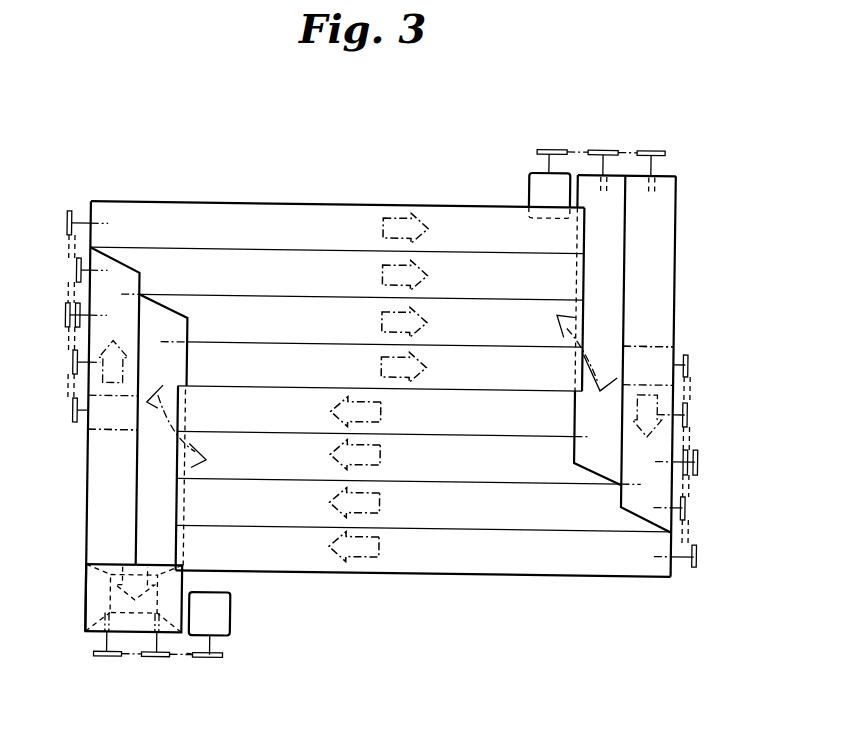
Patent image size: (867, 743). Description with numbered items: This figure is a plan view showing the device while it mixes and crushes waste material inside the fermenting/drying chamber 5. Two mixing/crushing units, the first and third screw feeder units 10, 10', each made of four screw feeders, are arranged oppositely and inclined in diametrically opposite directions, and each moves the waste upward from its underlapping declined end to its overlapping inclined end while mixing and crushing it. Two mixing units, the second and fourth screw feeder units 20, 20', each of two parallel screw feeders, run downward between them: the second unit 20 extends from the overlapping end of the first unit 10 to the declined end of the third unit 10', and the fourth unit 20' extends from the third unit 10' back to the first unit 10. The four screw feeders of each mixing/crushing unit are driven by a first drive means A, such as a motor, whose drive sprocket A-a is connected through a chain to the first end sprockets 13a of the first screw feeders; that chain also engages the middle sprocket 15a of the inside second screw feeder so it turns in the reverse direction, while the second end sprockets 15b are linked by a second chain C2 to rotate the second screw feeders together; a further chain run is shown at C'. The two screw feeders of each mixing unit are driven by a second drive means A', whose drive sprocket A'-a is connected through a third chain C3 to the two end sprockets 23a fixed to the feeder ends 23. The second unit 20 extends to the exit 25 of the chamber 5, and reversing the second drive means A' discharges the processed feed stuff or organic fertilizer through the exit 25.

The chamber 5 is at (278, 374).
The third screw feeder unit 10' is at (337, 262).
The first screw feeder unit 10 is at (424, 509).
The second screw feeder unit 20 is at (110, 416).
The fourth screw feeder unit 20' is at (656, 376).
The exit 25 is at (91, 596).
The ends of screw feeders 23 is at (101, 642).
The end sprockets 23a is at (101, 662).
The first end sprocket 13a is at (686, 406).
The middle sprocket 15a is at (688, 445).
The second end sprocket 15b is at (700, 468).
The first drive means A is at (386, 385).
The second drive means A' is at (427, 379).
The drive sprocket of first drive means A-a is at (686, 352).
The drive sprocket of second drive means A'-a is at (243, 675).
The connecting line C' is at (714, 382).
The second chain C2 is at (693, 527).
The third chain C3 is at (193, 663).